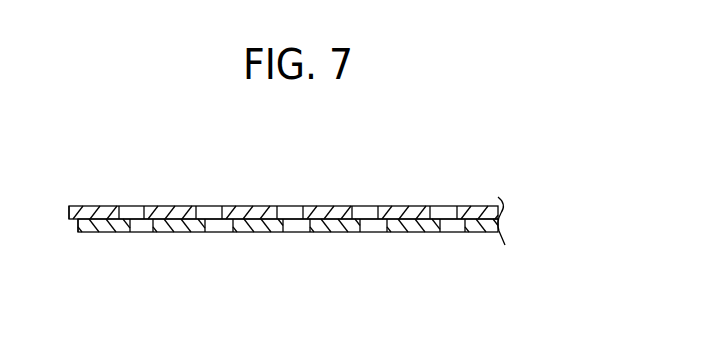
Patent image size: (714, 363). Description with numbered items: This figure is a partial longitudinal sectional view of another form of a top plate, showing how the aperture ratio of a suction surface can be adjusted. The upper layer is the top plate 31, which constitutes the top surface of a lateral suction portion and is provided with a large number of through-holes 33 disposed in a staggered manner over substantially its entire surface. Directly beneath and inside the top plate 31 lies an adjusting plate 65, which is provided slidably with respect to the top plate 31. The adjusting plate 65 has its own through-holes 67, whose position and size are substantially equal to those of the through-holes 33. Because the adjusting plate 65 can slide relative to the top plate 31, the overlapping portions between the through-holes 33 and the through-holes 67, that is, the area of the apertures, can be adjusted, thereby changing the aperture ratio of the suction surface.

The top plate 31 is at (465, 205).
The through-hole 33 is at (288, 207).
The adjusting plate 65 is at (338, 234).
The through-hole 67 is at (217, 233).